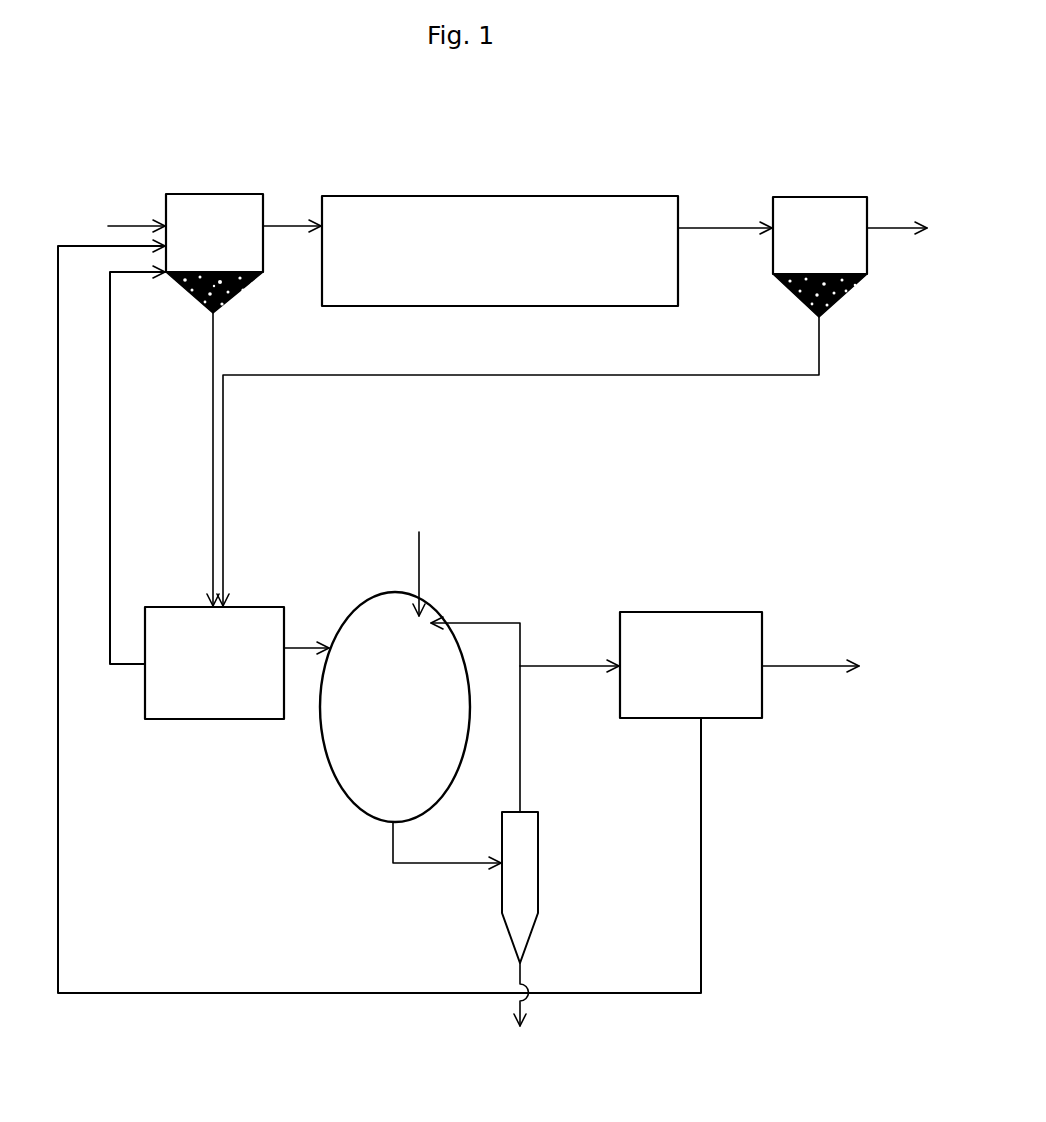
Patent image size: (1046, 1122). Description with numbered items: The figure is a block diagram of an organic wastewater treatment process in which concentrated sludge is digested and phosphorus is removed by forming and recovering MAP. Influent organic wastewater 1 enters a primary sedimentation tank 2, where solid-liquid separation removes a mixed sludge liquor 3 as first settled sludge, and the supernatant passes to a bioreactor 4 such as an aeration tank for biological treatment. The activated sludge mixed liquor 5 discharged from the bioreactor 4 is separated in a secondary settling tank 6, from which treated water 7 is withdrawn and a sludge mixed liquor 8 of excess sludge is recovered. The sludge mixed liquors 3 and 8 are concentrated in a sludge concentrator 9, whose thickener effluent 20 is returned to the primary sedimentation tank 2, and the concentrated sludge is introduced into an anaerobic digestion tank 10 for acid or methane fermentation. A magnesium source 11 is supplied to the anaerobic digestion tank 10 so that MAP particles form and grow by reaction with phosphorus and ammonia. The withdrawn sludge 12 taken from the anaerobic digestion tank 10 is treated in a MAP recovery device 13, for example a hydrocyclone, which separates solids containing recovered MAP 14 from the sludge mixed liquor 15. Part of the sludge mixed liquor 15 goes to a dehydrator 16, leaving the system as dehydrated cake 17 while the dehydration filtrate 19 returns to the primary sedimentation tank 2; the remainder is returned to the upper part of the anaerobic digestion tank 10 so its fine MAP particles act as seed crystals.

The influent organic wastewater 1 is at (125, 227).
The primary sedimentation tank 2 is at (220, 194).
The mixed sludge liquor 3 is at (213, 352).
The bioreactor 4 is at (472, 196).
The activated sludge mixed liquor 5 is at (719, 226).
The secondary settling tank 6 is at (828, 197).
The treated water 7 is at (908, 229).
The sludge mixed liquor 8 is at (819, 352).
The sludge concentrator 9 is at (162, 607).
The anaerobic digestion tank 10 is at (330, 775).
The magnesium source 11 is at (419, 555).
The withdrawn sludge 12 is at (399, 870).
The MAP recovery device 13 is at (538, 852).
The recovered MAP 14 is at (518, 1015).
The sludge mixed liquor after separation and recovery of MAP particles 15 is at (521, 752).
The dehydrator 16 is at (713, 612).
The dehydrated cake 17 is at (829, 667).
The dehydration filtrate 19 is at (701, 902).
The thickener effluent 20 is at (110, 452).